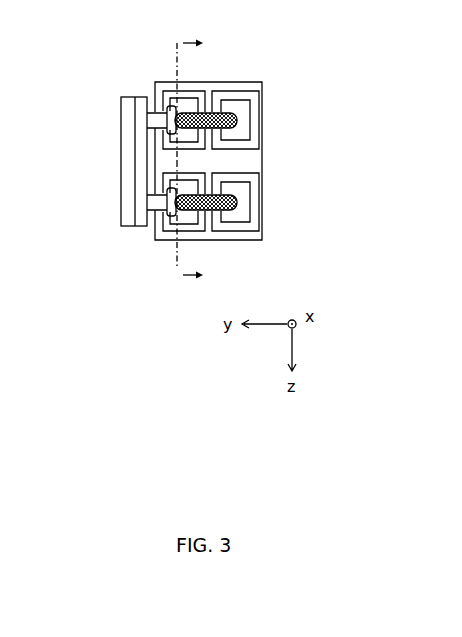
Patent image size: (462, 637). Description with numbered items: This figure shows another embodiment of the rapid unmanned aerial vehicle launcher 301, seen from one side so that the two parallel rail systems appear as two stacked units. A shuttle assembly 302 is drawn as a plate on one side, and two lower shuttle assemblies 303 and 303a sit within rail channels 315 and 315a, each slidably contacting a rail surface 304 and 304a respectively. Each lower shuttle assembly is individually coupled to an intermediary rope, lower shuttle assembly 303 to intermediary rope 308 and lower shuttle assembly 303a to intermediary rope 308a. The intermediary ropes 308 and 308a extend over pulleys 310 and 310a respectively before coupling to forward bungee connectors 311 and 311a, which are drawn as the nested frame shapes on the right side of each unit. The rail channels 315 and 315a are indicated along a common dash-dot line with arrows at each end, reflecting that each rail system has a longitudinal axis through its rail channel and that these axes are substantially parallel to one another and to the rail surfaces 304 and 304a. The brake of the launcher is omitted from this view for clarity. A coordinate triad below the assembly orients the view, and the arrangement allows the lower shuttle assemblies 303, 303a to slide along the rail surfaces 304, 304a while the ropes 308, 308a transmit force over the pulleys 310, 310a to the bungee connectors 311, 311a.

The actuator assembly 301 is at (112, 104).
The shuttle assembly 302 is at (133, 176).
The lower shuttle assembly 303 is at (172, 231).
The lower shuttle assembly 303a is at (172, 90).
The rail surface 304 is at (200, 232).
The rail surface 304a is at (238, 82).
The intermediary rope 308 is at (237, 204).
The intermediary rope 308a is at (237, 122).
The pulley 310 is at (232, 183).
The pulley 310a is at (232, 137).
The forward bungee connector 311 is at (245, 222).
The forward bungee connector 311a is at (242, 105).
The rail channel 315 is at (188, 229).
The rail channel 315a is at (188, 100).